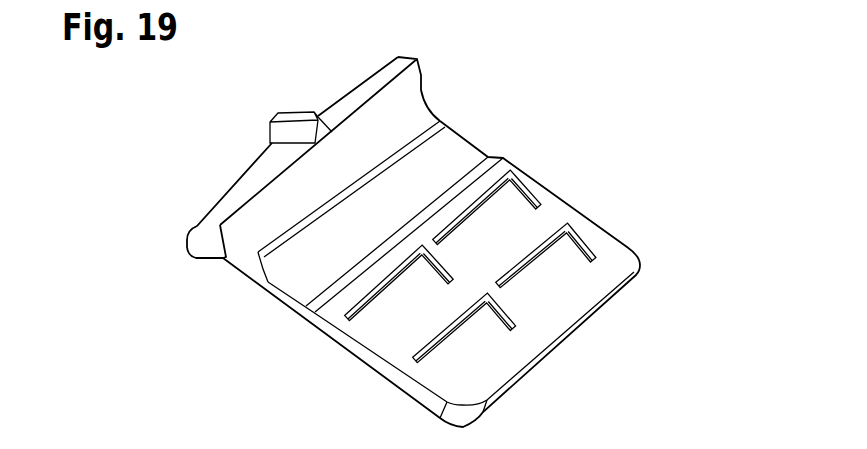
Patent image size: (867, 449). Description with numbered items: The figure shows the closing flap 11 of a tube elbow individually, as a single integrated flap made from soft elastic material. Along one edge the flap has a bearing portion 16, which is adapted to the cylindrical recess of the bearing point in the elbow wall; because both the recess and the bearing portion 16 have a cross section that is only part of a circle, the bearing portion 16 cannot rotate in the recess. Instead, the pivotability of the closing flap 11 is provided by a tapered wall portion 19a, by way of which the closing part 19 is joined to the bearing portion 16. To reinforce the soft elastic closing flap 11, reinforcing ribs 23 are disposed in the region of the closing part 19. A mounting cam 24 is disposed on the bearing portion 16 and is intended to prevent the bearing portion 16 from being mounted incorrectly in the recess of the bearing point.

The closing flap 11 is at (548, 168).
The bearing portion 16 is at (408, 80).
The closing part 19 is at (552, 210).
The tapered wall portion 19a is at (283, 297).
The reinforcing ribs 23 is at (416, 351).
The mounting cam 24 is at (287, 132).